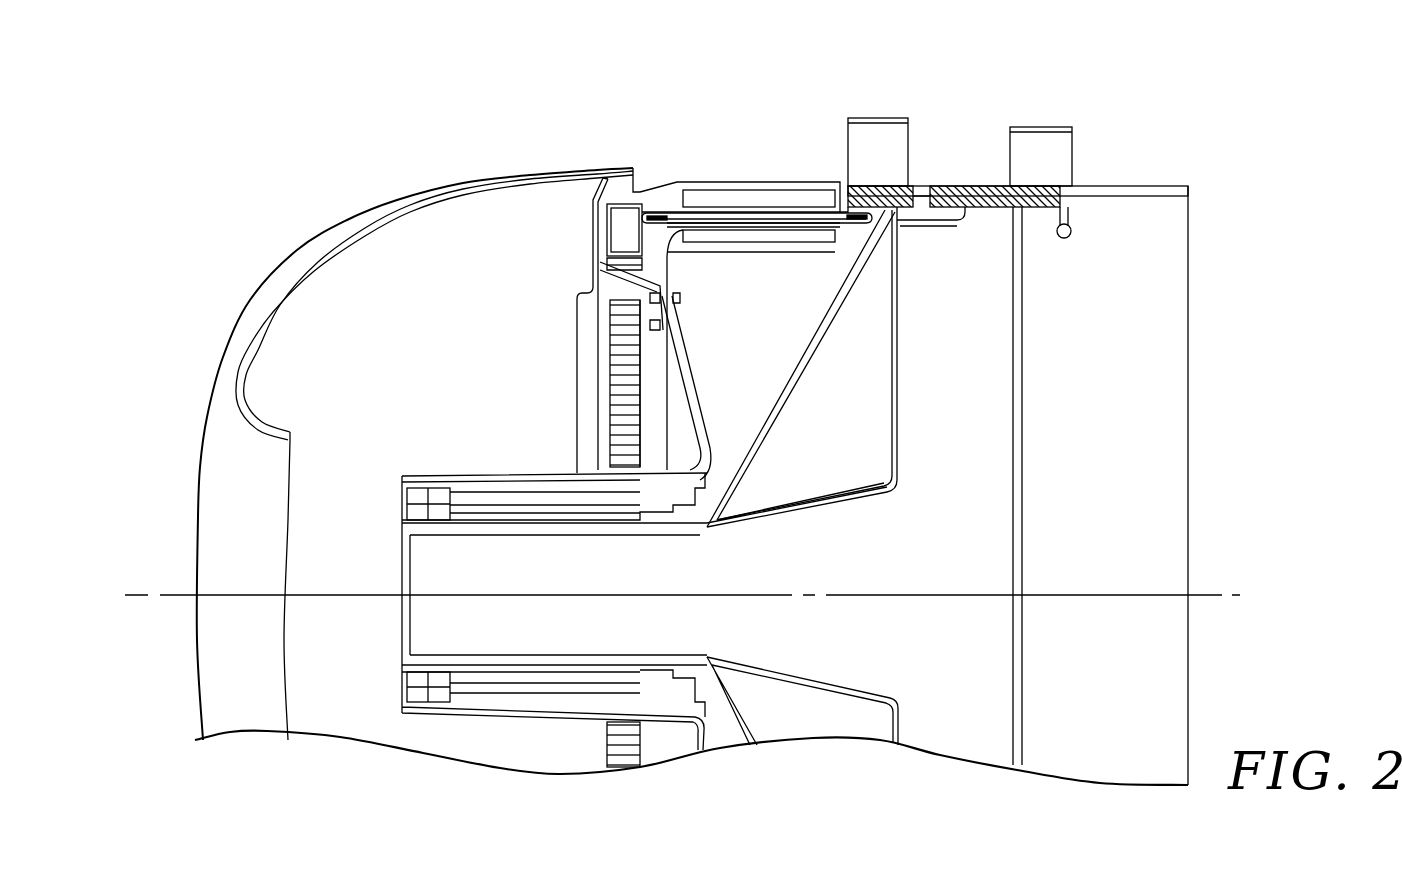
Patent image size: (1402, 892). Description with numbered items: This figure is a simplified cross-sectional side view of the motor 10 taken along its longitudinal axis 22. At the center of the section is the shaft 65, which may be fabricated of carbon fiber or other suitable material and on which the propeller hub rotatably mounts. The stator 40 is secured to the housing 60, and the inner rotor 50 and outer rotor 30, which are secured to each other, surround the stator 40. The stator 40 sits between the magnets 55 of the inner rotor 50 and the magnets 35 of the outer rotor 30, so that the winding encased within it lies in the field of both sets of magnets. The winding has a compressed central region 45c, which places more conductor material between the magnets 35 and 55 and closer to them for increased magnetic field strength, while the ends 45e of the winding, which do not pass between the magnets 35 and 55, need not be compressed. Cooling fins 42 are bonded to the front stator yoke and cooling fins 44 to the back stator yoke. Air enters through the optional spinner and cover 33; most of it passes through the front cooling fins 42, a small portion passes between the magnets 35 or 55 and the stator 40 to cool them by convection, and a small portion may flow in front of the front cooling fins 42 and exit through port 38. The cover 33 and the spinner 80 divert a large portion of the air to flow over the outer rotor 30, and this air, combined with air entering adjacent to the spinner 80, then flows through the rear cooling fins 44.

The motor 10 is at (405, 125).
The axis 22 is at (165, 594).
The outer rotor 30 is at (750, 180).
The cover 33 is at (593, 200).
The magnets 35 is at (798, 195).
The port 38 is at (631, 172).
The stator 40 is at (728, 208).
The cooling fins 42 is at (625, 235).
The cooling fins 44 is at (874, 128).
The compressed central region 45c is at (783, 228).
The ends 45e is at (660, 213).
The inner rotor 50 is at (688, 432).
The magnets 55 is at (716, 240).
The housing 60 is at (752, 418).
The shaft 65 is at (437, 555).
The spinner 80 is at (268, 300).